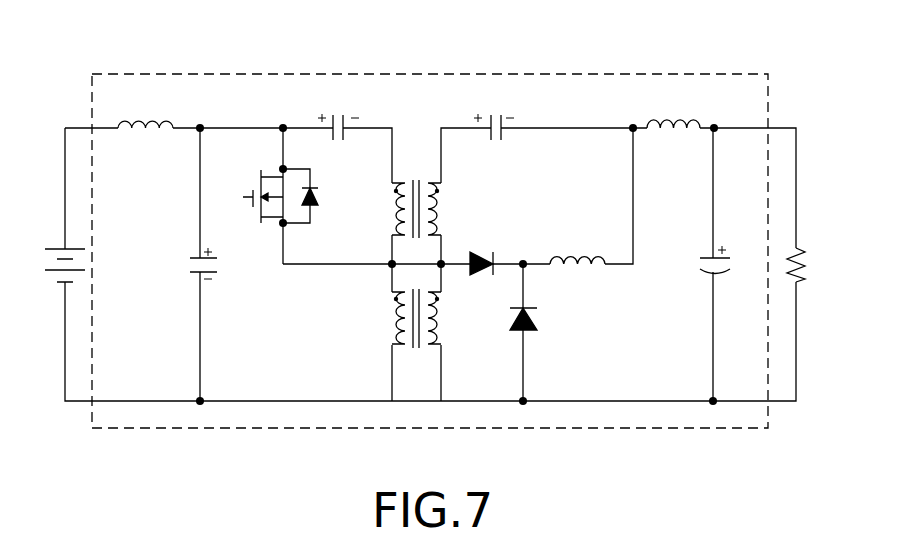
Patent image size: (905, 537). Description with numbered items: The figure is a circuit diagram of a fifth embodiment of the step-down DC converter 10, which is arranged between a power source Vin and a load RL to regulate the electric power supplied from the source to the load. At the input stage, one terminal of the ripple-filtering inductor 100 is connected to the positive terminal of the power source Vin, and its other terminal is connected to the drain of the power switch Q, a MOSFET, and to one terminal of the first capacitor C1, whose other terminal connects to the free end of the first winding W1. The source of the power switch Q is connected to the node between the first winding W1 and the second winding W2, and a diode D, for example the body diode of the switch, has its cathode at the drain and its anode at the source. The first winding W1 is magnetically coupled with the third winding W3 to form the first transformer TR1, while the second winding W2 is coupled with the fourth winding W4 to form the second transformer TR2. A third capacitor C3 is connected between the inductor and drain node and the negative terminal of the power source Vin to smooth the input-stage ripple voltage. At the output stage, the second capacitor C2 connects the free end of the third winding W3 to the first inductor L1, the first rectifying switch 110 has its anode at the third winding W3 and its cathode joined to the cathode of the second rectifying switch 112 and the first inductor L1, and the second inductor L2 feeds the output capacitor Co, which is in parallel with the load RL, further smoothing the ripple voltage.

The step-down DC converter 10 is at (458, 77).
The ripple-filtering inductor 100 is at (144, 122).
The first rectifying switch 110 is at (483, 253).
The second rectifying switch 112 is at (537, 320).
The power source Vin is at (44, 265).
The first capacitor C1 is at (338, 112).
The second capacitor C2 is at (494, 112).
The third capacitor C3 is at (186, 265).
The output capacitor Co is at (699, 264).
The first inductor L1 is at (577, 247).
The second inductor L2 is at (673, 109).
The power switch Q is at (252, 196).
The diode D is at (311, 196).
The first transformer TR1 is at (418, 195).
The second transformer TR2 is at (416, 334).
The first winding W1 is at (393, 203).
The second winding W2 is at (395, 328).
The third winding W3 is at (436, 203).
The fourth winding W4 is at (432, 328).
The load RL is at (813, 265).